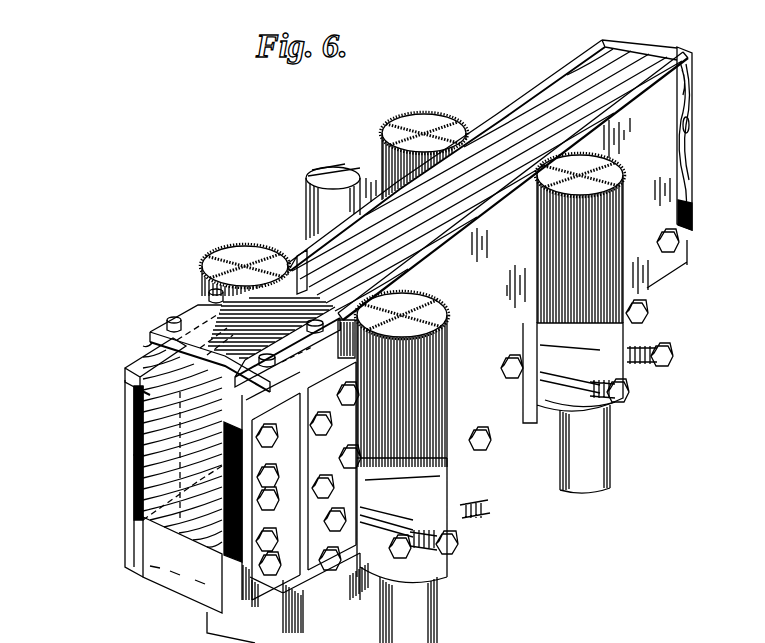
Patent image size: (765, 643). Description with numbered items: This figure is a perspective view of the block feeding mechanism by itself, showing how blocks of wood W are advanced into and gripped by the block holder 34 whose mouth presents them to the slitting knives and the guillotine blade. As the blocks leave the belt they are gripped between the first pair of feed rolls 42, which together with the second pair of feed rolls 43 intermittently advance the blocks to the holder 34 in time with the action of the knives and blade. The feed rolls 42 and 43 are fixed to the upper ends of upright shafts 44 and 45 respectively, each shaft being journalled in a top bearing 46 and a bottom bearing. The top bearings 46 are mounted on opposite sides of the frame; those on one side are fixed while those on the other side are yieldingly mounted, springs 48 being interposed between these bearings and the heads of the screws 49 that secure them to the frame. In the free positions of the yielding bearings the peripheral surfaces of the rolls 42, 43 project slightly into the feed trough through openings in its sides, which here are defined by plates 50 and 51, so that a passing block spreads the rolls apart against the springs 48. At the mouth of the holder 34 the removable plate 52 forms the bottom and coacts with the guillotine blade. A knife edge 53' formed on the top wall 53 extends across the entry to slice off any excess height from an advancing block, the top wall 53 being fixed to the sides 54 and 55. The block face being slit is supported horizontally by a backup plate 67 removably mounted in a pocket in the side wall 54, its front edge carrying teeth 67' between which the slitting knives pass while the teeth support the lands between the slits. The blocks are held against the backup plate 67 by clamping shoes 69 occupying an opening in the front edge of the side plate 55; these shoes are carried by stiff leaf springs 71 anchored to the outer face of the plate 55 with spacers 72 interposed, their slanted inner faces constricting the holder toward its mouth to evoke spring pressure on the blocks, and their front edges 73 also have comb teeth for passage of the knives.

The block holder 34 is at (135, 315).
The first pair of feed rolls 42 is at (420, 126).
The second pair of feed rolls 43 is at (268, 248).
The upright shaft 44 is at (598, 466).
The upright shaft 45 is at (412, 608).
The top bearing 46 is at (553, 403).
The spring 48 is at (648, 346).
The screw 49 is at (652, 390).
The plate 50 is at (553, 62).
The plate 51 is at (375, 196).
The plate 52 is at (148, 526).
The top wall 53 is at (210, 333).
The knife edge 53' is at (297, 258).
The side wall 54 is at (145, 363).
The side wall 55 is at (248, 376).
The backup plate 67 is at (114, 472).
The teeth 67' is at (107, 487).
The clamping shoe 69 is at (262, 432).
The leaf spring 71 is at (303, 398).
The spacer 72 is at (308, 326).
The front edge 73 is at (250, 452).
The block of wood W is at (524, 108).